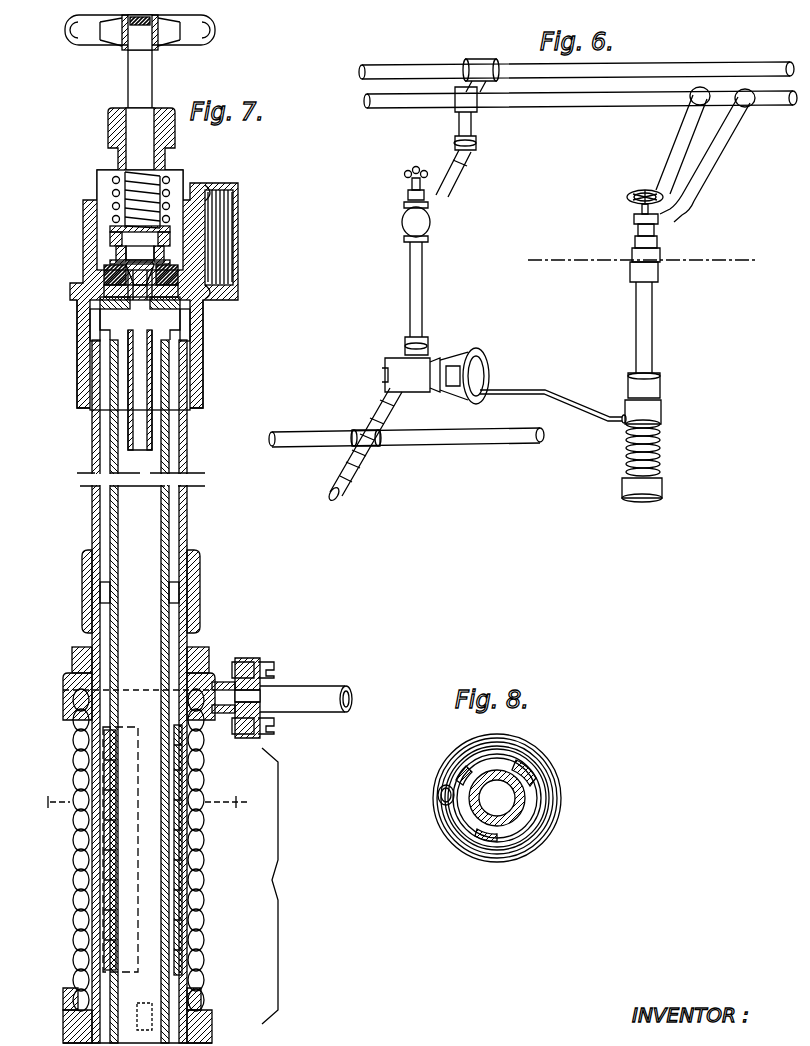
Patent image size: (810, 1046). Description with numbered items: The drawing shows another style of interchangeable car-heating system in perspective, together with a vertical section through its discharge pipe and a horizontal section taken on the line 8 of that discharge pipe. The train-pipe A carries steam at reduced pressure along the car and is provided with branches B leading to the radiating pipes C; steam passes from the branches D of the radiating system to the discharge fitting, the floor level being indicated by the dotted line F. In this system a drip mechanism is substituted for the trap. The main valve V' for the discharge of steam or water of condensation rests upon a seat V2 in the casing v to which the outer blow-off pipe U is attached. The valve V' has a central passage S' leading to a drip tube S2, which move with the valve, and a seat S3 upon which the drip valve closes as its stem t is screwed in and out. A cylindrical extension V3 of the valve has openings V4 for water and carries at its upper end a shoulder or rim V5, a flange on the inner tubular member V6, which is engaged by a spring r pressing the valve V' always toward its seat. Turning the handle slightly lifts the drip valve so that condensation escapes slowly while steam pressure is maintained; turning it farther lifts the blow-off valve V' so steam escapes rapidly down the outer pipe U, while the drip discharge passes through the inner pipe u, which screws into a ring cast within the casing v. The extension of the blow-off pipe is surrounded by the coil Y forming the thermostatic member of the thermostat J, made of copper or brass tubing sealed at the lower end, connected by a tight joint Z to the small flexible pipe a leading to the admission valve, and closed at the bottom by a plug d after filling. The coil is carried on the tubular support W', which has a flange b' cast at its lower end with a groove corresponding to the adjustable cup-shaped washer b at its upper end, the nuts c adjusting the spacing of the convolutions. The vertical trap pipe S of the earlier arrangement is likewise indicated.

In FIG. 7, the stem t is at (145, 102).
In FIG. 6, the stem t is at (640, 214).
In FIG. 7, the spring r is at (182, 172).
In FIG. 7, the vertical pipe of the trap S is at (152, 216).
In FIG. 7, the inner tubular member V6 is at (110, 229).
In FIG. 7, the shoulder or rim V5 is at (110, 240).
In FIG. 7, the cylindrical extension V3 is at (116, 254).
In FIG. 7, the openings V4 is at (112, 262).
In FIG. 7, the main valve V' is at (153, 278).
In FIG. 7, the seat S3 is at (100, 300).
In FIG. 7, the passage S' is at (105, 324).
In FIG. 7, the casing v is at (90, 345).
In FIG. 6, the casing v is at (632, 252).
In FIG. 7, the seat V2 is at (205, 308).
In FIG. 7, the drip tube S2 is at (137, 405).
In FIG. 7, the outer blow-off pipe U is at (195, 508).
In FIG. 7, the inner pipe u is at (169, 537).
In FIG. 8, the inner pipe u is at (516, 788).
In FIG. 7, the nuts c is at (72, 658).
In FIG. 7, the cup-shaped washer b is at (125, 696).
In FIG. 7, the tubular support W' is at (62, 850).
In FIG. 8, the tubular support W' is at (509, 820).
In FIG. 7, the coil Y is at (204, 764).
In FIG. 8, the coil Y is at (561, 802).
In FIG. 7, the section line 8 is at (147, 803).
In FIG. 7, the thermostat J is at (279, 886).
In FIG. 6, the thermostat J is at (660, 451).
In FIG. 8, the thermostat J is at (542, 756).
In FIG. 7, the flange b' is at (64, 1015).
In FIG. 7, the plug d is at (198, 1028).
In FIG. 7, the tight joint Z is at (252, 660).
In FIG. 7, the flexible pipe a is at (330, 690).
In FIG. 6, the flexible pipe a is at (540, 392).
In FIG. 6, the radiating pipes C is at (565, 65).
In FIG. 6, the valve N is at (406, 226).
In FIG. 6, the mixing valve M is at (395, 360).
In FIG. 6, the branches B is at (382, 396).
In FIG. 6, the train-pipe A is at (425, 447).
In FIG. 6, the branches D is at (678, 148).
In FIG. 6, the floor level line F is at (705, 258).